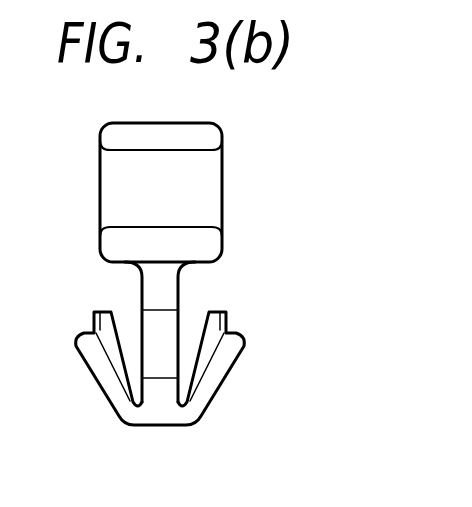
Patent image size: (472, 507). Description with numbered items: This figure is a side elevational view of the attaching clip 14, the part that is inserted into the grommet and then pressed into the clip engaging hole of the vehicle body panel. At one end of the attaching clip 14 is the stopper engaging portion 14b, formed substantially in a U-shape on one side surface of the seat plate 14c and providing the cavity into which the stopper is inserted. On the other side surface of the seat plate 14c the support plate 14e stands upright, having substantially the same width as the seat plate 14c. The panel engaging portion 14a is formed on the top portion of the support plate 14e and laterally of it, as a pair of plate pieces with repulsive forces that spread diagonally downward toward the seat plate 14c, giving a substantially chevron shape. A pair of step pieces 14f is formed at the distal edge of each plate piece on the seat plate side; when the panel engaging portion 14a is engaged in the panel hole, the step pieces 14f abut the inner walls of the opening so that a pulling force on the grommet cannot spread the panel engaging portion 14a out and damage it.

The attaching clip 14 is at (192, 262).
The panel engaging portion 14a is at (222, 380).
The stopper engaging portion 14b is at (100, 157).
The seat plate 14c is at (210, 245).
The support plate 14e is at (165, 285).
The step pieces 14f is at (227, 328).